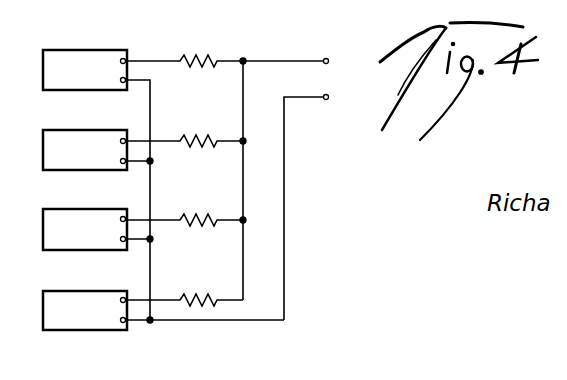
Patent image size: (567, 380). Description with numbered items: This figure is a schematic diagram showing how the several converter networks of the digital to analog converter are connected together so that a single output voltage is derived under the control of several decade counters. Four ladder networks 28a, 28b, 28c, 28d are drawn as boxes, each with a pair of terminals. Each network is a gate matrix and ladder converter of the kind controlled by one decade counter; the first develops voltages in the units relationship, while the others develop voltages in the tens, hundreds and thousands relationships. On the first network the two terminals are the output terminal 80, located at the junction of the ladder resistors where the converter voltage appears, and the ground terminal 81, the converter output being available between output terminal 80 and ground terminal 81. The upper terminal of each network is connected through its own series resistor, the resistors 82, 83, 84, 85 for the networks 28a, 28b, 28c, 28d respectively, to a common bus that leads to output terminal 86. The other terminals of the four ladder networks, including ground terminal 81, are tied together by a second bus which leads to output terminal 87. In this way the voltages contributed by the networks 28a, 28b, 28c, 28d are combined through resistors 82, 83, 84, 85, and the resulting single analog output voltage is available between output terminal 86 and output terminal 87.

The ladder network 28a is at (85, 70).
The ladder network 28b is at (85, 150).
The ladder network 28c is at (85, 229).
The ladder network 28d is at (85, 310).
The output terminal 80 is at (122, 58).
The ground terminal 81 is at (122, 83).
The resistor 82 is at (204, 52).
The resistor 83 is at (200, 133).
The resistor 84 is at (199, 212).
The resistor 85 is at (199, 293).
The output terminal 86 is at (326, 58).
The output terminal 87 is at (326, 101).